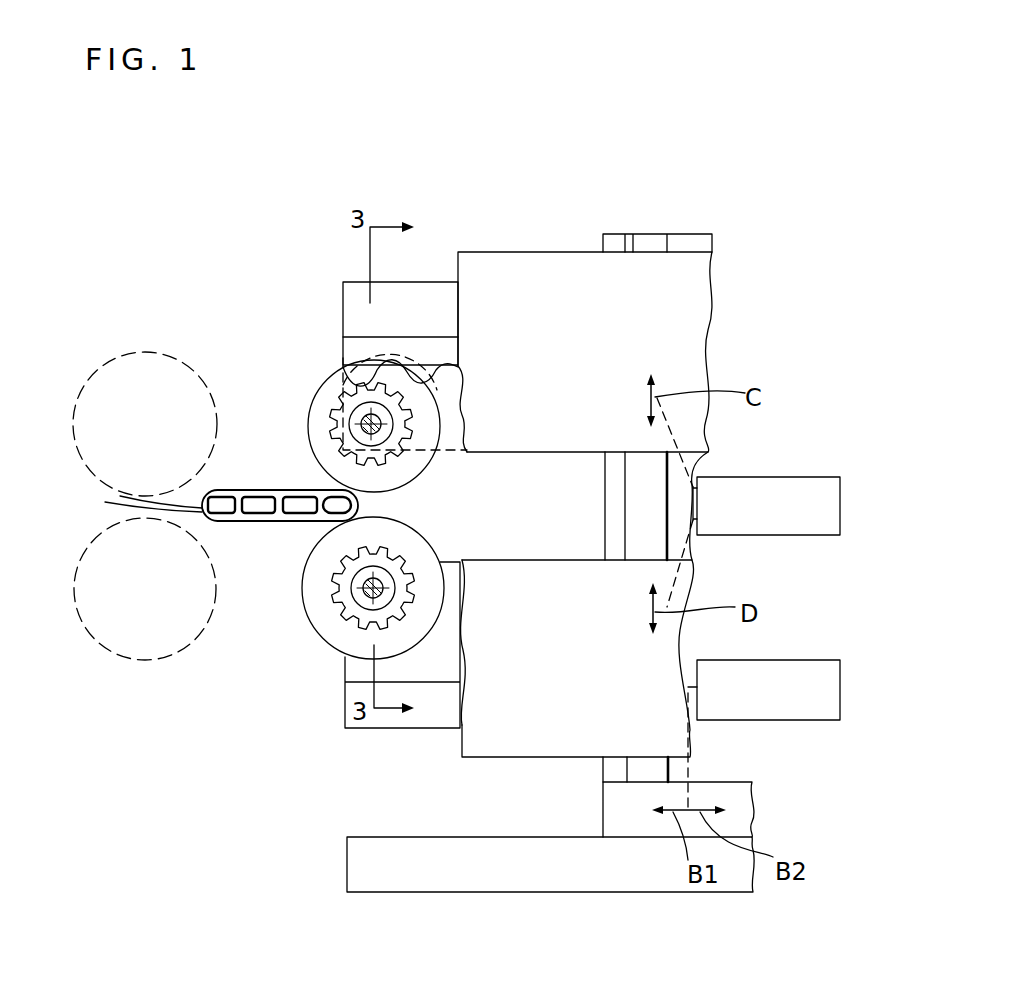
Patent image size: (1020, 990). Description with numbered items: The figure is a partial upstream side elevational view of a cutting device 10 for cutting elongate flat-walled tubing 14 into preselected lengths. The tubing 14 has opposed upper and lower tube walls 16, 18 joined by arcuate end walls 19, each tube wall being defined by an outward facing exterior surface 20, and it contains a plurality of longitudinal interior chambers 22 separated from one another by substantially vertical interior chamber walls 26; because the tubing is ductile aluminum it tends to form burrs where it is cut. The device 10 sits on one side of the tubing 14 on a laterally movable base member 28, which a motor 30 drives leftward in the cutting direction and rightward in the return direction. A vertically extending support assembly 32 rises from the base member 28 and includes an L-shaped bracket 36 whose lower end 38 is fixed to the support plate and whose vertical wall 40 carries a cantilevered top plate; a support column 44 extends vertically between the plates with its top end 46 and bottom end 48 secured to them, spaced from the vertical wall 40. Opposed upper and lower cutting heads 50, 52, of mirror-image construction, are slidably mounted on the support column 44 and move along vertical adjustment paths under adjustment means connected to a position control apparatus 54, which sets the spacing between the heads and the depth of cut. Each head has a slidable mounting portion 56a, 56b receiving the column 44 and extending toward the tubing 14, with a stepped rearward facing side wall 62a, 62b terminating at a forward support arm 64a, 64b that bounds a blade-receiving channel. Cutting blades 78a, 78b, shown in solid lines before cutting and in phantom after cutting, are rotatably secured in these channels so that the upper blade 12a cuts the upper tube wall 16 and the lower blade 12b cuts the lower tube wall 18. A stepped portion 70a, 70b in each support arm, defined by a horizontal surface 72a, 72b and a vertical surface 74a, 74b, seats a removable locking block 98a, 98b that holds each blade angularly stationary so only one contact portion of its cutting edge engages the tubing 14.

The cutting device 10 is at (471, 190).
The upper cutting blade 12a is at (74, 392).
The lower cutting blade 12b is at (88, 537).
The elongate flat-walled tubing 14 is at (202, 504).
The upper tube wall 16 is at (240, 490).
The lower tube wall 18 is at (240, 517).
The arcuate end walls 19 is at (202, 500).
The exterior surface 20 is at (250, 488).
The interior chambers 22 is at (288, 497).
The interior chamber walls 26 is at (322, 497).
The base member 28 is at (385, 880).
The motor 30 is at (825, 667).
The support assembly 32 is at (618, 825).
The L-shaped bracket 36 is at (597, 233).
The lower end 38 is at (605, 773).
The vertical wall 40 is at (697, 236).
The support column 44 is at (633, 232).
The top end 46 is at (657, 232).
The bottom end 48 is at (640, 775).
The upper cutting head 50 is at (527, 257).
The lower cutting head 52 is at (480, 757).
The position control apparatus 54 is at (832, 477).
The slidable mounting portion 56a is at (707, 322).
The slidable mounting portion 56b is at (690, 580).
The rearward facing side wall 62a is at (700, 278).
The rearward facing side wall 62b is at (665, 647).
The forward support arm 64a is at (458, 452).
The forward support arm 64b is at (453, 560).
The stepped portion 70a is at (457, 278).
The stepped portion 70b is at (446, 710).
The upward facing horizontal surface 72a is at (343, 282).
The horizontal surface 72b is at (345, 660).
The sidewardly facing vertical surface 74a is at (455, 300).
The vertical surface 74b is at (452, 748).
The cutting blade 78a is at (315, 398).
The cutting blade 78b is at (322, 648).
The locking block 98a is at (388, 297).
The locking block 98b is at (402, 722).